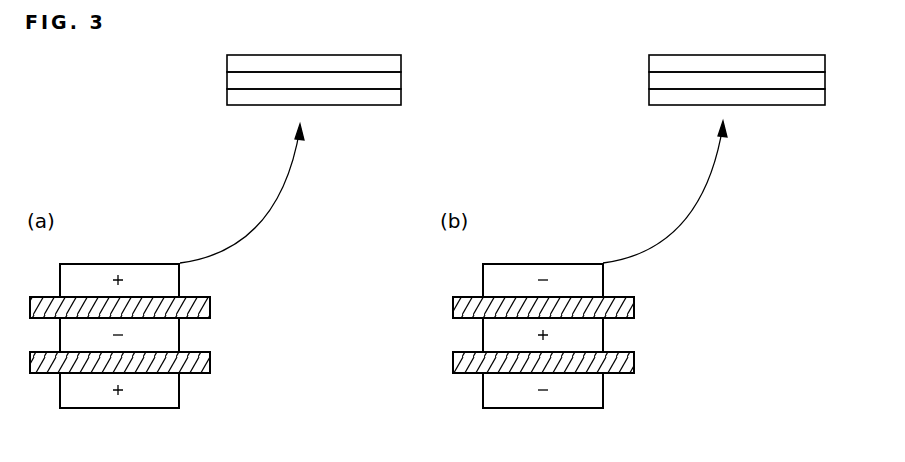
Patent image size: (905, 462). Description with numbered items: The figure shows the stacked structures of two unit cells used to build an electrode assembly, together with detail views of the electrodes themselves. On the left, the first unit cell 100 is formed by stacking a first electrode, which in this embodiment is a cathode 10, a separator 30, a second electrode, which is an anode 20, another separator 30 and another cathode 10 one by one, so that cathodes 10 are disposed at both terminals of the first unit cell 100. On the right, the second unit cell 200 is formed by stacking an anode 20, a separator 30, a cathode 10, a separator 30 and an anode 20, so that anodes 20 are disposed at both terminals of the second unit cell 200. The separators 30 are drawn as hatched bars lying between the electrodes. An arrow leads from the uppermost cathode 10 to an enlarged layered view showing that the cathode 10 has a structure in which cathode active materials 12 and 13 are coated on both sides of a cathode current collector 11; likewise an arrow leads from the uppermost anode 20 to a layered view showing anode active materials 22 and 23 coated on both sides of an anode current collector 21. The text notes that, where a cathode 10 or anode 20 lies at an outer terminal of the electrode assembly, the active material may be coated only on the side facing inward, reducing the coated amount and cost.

The cathode 10 is at (176, 280).
The anode 20 is at (176, 335).
The separator 30 is at (210, 305).
The first unit cell 100 is at (166, 234).
The second unit cell 200 is at (588, 234).
The cathode current collector 11 is at (232, 82).
The cathode active material 12 is at (232, 63).
The cathode active material 13 is at (232, 98).
The anode current collector 21 is at (655, 82).
The anode active material 22 is at (655, 63).
The anode active material 23 is at (655, 98).